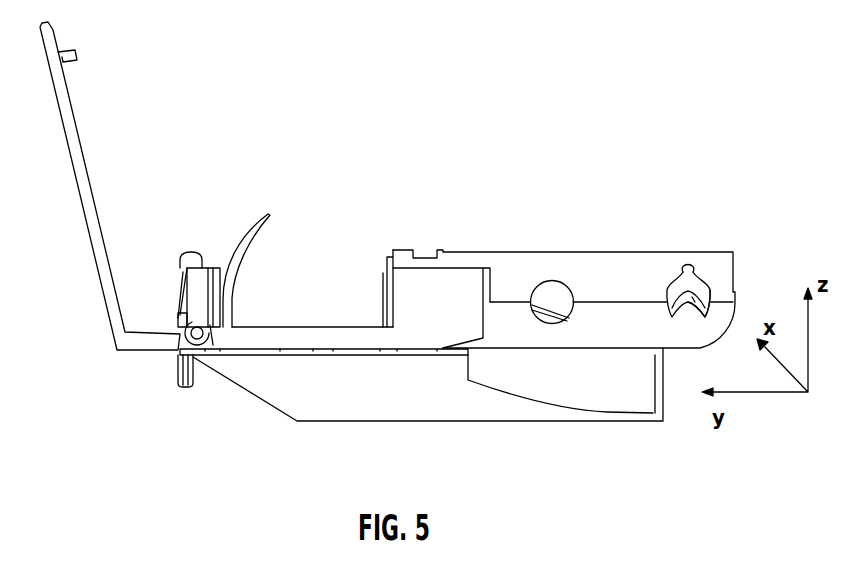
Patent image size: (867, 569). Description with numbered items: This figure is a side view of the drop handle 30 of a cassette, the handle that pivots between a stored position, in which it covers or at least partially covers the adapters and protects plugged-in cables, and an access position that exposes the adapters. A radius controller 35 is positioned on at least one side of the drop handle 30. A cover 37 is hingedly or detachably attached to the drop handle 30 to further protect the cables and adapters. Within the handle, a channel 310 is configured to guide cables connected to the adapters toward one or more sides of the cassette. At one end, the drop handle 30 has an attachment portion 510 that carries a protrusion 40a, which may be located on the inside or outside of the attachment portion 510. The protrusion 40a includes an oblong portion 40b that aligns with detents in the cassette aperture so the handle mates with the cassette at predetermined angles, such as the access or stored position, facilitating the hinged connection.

The drop handle 30 is at (508, 159).
The radius controller 35 is at (553, 412).
The cover 37 is at (72, 178).
The channel 310 is at (310, 274).
The attachment portion 510 is at (613, 266).
The protrusion 40a is at (695, 289).
The oblong portion 40b is at (688, 265).